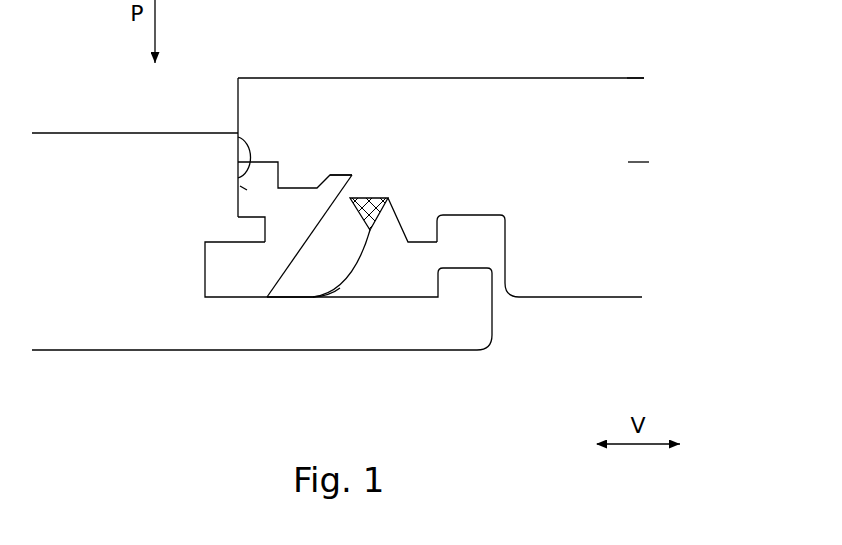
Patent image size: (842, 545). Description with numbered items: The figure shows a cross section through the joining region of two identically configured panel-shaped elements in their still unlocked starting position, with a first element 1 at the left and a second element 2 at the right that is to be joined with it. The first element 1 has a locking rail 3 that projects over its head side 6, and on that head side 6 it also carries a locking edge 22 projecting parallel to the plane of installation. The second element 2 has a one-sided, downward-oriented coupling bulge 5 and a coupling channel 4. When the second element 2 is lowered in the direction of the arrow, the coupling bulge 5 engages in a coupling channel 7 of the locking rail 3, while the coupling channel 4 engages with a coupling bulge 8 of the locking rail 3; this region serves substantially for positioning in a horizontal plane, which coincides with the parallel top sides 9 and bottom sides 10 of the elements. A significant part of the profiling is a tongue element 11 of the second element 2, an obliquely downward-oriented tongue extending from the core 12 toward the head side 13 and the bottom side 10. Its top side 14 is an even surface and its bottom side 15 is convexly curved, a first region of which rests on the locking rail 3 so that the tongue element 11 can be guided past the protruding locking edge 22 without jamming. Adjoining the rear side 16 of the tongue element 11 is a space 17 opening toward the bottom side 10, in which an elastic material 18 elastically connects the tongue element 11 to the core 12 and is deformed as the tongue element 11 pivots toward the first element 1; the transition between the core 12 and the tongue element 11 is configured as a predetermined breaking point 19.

The first element 1 is at (100, 133).
The second element 2 is at (548, 78).
The locking rail 3 is at (252, 327).
The coupling channel 4 is at (483, 229).
The coupling bulge 5 is at (448, 215).
The head side 6 is at (238, 135).
The coupling channel 7 is at (431, 277).
The coupling bulge 8 is at (468, 280).
The top side 9 is at (627, 78).
The bottom side 10 is at (93, 350).
The tongue element 11 is at (303, 260).
The core 12 is at (578, 217).
The head side 13 is at (240, 106).
The top side 14 is at (312, 228).
The bottom side 15 is at (346, 280).
The rear side 16 is at (376, 241).
The space 17 is at (383, 228).
The elastic material 18 is at (385, 198).
The predetermined breaking point 19 is at (348, 192).
The locking edge 22 is at (258, 240).